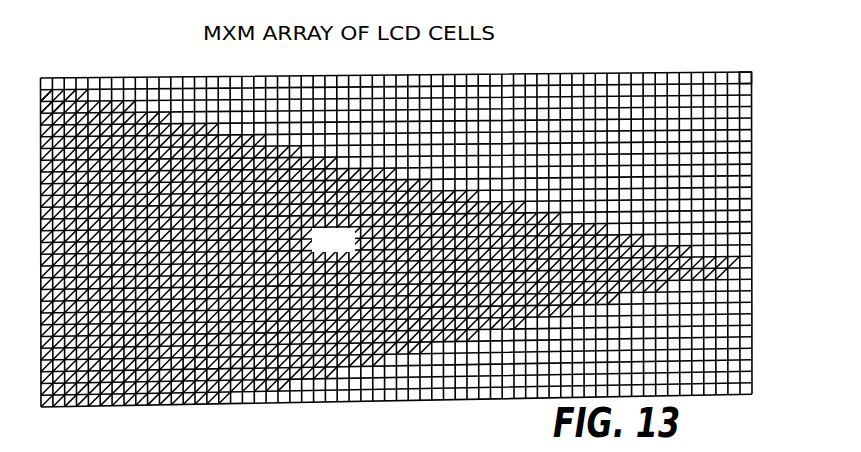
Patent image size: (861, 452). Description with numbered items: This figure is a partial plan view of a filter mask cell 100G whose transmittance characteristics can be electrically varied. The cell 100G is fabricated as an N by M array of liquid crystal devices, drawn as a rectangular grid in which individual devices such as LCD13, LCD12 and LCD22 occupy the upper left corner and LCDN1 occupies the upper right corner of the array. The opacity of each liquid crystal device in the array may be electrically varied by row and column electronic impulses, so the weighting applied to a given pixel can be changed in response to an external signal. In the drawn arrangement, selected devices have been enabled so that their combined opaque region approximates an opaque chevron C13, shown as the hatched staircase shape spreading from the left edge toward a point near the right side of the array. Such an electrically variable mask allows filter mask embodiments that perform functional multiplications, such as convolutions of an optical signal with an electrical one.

The filter mask cell 100G is at (598, 70).
The liquid crystal device LCD13 is at (41, 107).
The liquid crystal device LCD12 is at (46, 107).
The liquid crystal device LCD22 is at (59, 107).
The liquid crystal device LCDN1 is at (743, 73).
The opaque chevron C13 is at (333, 240).